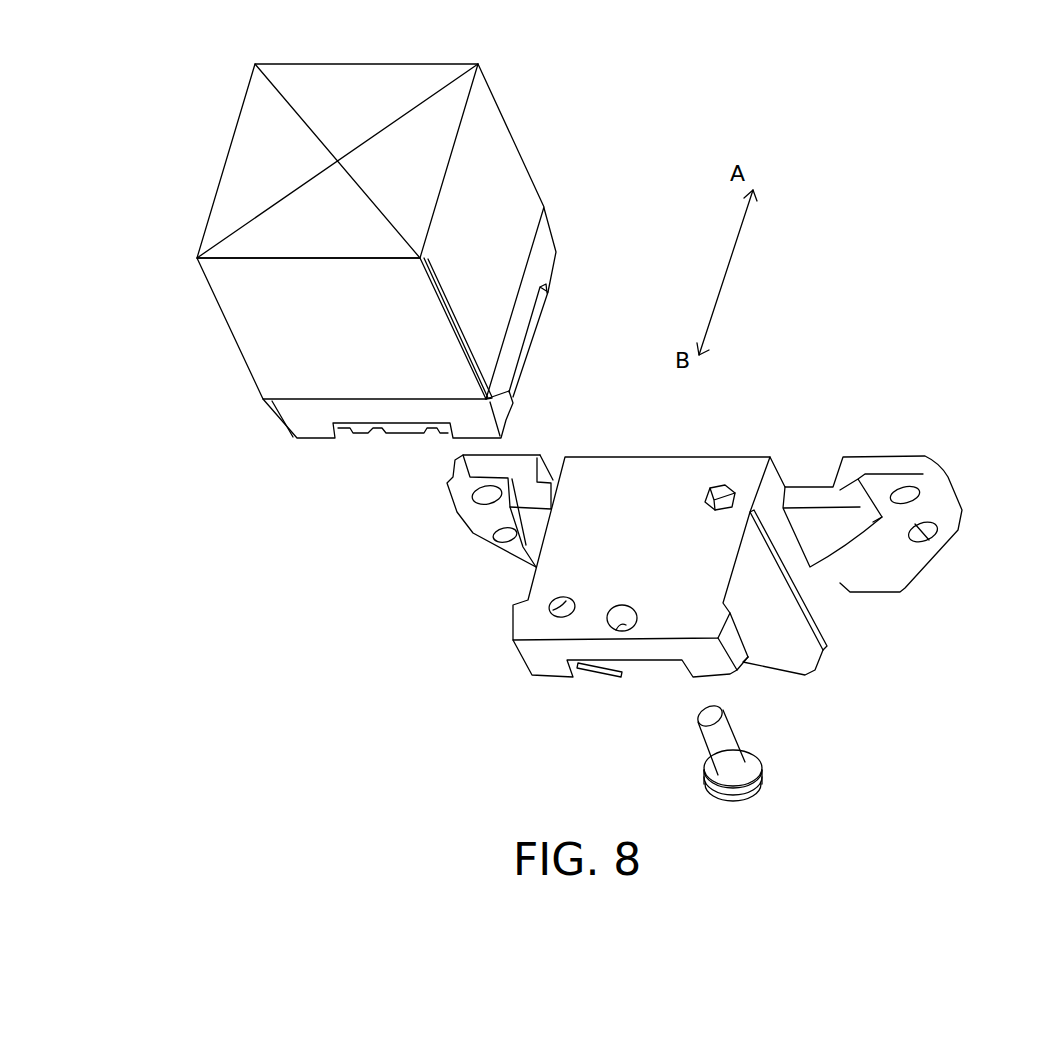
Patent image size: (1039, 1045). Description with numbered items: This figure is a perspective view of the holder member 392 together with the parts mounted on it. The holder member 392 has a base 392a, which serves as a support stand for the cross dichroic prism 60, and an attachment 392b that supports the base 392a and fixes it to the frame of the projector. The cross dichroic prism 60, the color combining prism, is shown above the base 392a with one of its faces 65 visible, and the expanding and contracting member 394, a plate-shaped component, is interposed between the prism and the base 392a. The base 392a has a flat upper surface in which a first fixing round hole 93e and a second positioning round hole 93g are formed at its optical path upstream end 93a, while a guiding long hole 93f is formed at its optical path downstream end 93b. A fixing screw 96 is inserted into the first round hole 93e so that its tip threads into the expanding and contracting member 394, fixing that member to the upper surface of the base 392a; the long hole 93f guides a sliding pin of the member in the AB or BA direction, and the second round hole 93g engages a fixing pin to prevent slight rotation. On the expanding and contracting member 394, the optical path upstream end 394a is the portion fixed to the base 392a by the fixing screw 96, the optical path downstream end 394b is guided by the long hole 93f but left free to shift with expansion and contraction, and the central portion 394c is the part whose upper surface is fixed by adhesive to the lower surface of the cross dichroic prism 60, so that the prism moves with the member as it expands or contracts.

The cross dichroic prism 60 is at (426, 277).
The side face of head unit 65 is at (517, 183).
The expanding and contracting member 394 is at (397, 437).
The optical path upstream end 394a is at (507, 407).
The optical path downstream end 394b is at (546, 265).
The central portion 394c is at (531, 327).
The holder member 392 is at (720, 551).
The base 392a is at (513, 612).
The attachment 392b is at (890, 575).
The optical path upstream end 93a is at (660, 623).
The optical path downstream end 93b is at (642, 483).
The first fixing round hole 93e is at (622, 631).
The guiding long hole 93f is at (723, 486).
The second positioning round hole 93g is at (557, 617).
The fixing screw 96 is at (760, 752).